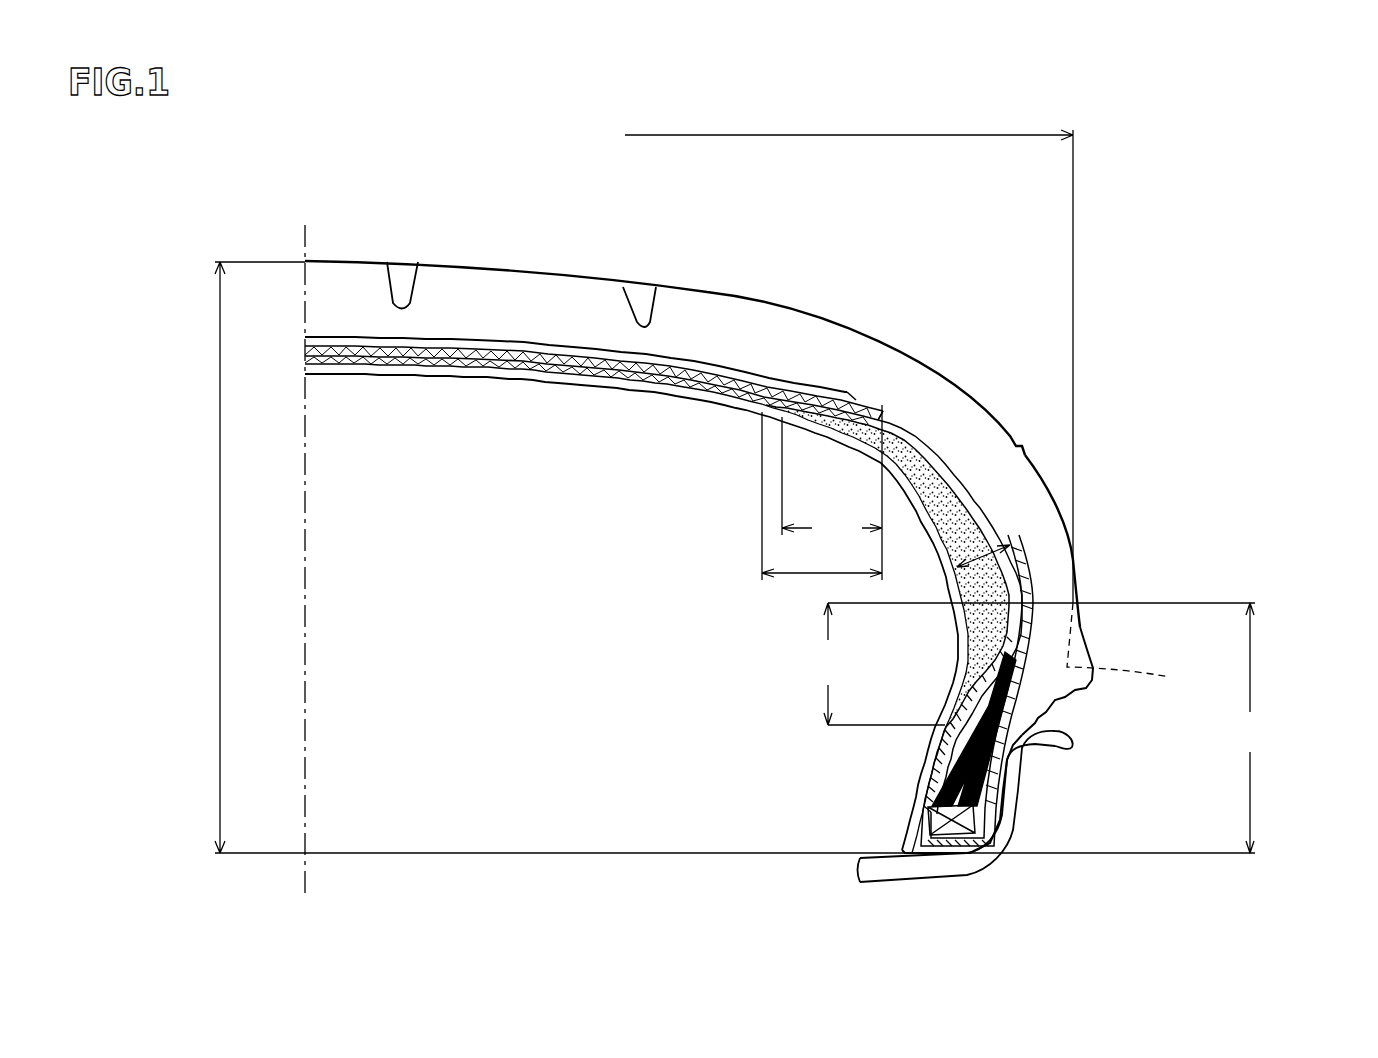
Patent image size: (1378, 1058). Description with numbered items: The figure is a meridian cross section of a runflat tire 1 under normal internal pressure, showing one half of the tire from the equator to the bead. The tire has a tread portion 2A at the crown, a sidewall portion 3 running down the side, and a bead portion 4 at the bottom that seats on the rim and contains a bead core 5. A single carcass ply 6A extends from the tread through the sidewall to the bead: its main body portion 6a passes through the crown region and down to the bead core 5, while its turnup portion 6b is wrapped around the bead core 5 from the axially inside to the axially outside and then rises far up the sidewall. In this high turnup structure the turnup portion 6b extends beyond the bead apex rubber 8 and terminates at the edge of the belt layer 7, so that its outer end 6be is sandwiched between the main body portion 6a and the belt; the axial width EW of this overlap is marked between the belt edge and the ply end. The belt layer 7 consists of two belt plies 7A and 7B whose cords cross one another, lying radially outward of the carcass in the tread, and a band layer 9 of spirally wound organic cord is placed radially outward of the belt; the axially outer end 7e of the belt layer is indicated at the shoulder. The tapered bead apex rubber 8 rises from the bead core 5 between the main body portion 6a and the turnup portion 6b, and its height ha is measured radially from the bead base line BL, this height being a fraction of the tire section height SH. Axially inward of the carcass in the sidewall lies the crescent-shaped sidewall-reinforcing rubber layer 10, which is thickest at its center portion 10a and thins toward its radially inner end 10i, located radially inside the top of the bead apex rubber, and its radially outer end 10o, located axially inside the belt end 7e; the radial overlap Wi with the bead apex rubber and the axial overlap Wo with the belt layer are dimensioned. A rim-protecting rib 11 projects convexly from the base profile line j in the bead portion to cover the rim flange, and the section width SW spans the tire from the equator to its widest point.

The runflat tire 1 is at (1118, 321).
The tread portion 2A is at (688, 290).
The sidewall portion 3 is at (1143, 460).
The bead portion 4 is at (877, 812).
The bead core 5 is at (960, 822).
The carcass ply 6A is at (1245, 492).
The main body portion 6a is at (1033, 603).
The turnup portion 6b is at (1025, 545).
The outer end of the turnup portion 6be is at (749, 408).
The belt layer 7 is at (436, 178).
The belt ply 7A is at (381, 360).
The belt ply 7B is at (342, 350).
The axially outer end of the belt layer 7e is at (873, 395).
The bead apex rubber 8 is at (975, 765).
The band layer 9 is at (500, 338).
The sidewall-reinforcing rubber layer 10 is at (912, 475).
The center portion 10a is at (978, 545).
The radially inner end 10i is at (923, 732).
The radially outer end 10o is at (799, 432).
The rim-protecting rib 11 is at (1092, 656).
The base profile line j is at (1124, 651).
The section width SW is at (825, 362).
The section height SH is at (254, 557).
The bead base line BL is at (1085, 855).
The axial width of the overlapping part EW is at (778, 578).
The axial width of overlapping part Wo is at (832, 480).
The radial width of overlapping part Wi is at (1035, 664).
The section height of the bead apex rubber ha is at (1249, 728).